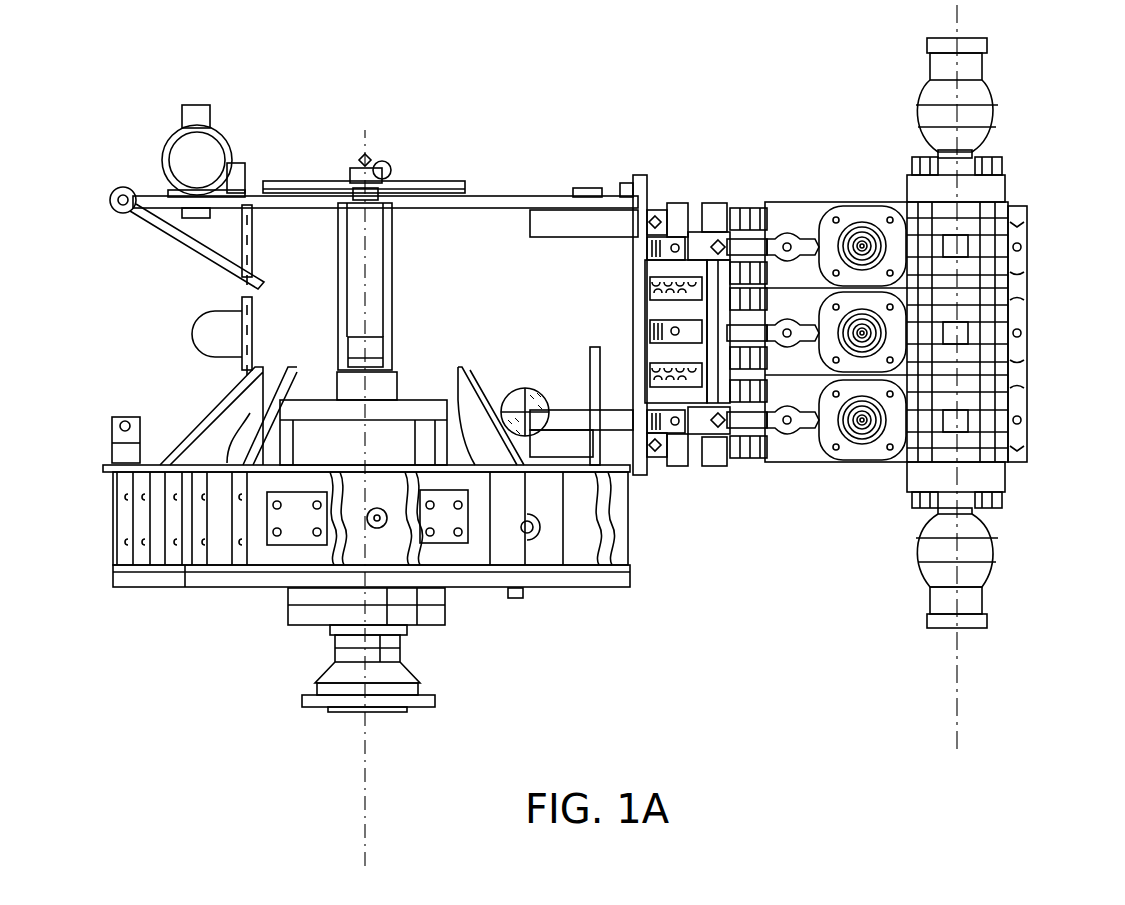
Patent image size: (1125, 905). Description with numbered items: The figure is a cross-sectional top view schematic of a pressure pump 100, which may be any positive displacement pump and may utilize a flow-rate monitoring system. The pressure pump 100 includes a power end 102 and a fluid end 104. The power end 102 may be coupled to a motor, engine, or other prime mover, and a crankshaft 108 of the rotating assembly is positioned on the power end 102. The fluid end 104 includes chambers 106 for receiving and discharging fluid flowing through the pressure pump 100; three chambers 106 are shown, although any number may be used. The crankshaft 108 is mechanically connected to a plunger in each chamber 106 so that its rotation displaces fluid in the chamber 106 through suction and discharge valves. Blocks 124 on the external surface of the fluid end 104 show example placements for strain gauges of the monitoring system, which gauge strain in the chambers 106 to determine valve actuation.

The pressure pump 100 is at (580, 435).
The power end 102 is at (370, 485).
The fluid end 104 is at (914, 377).
The chambers 106 is at (1027, 240).
The crankshaft 108 is at (385, 243).
The blocks 124 is at (963, 420).